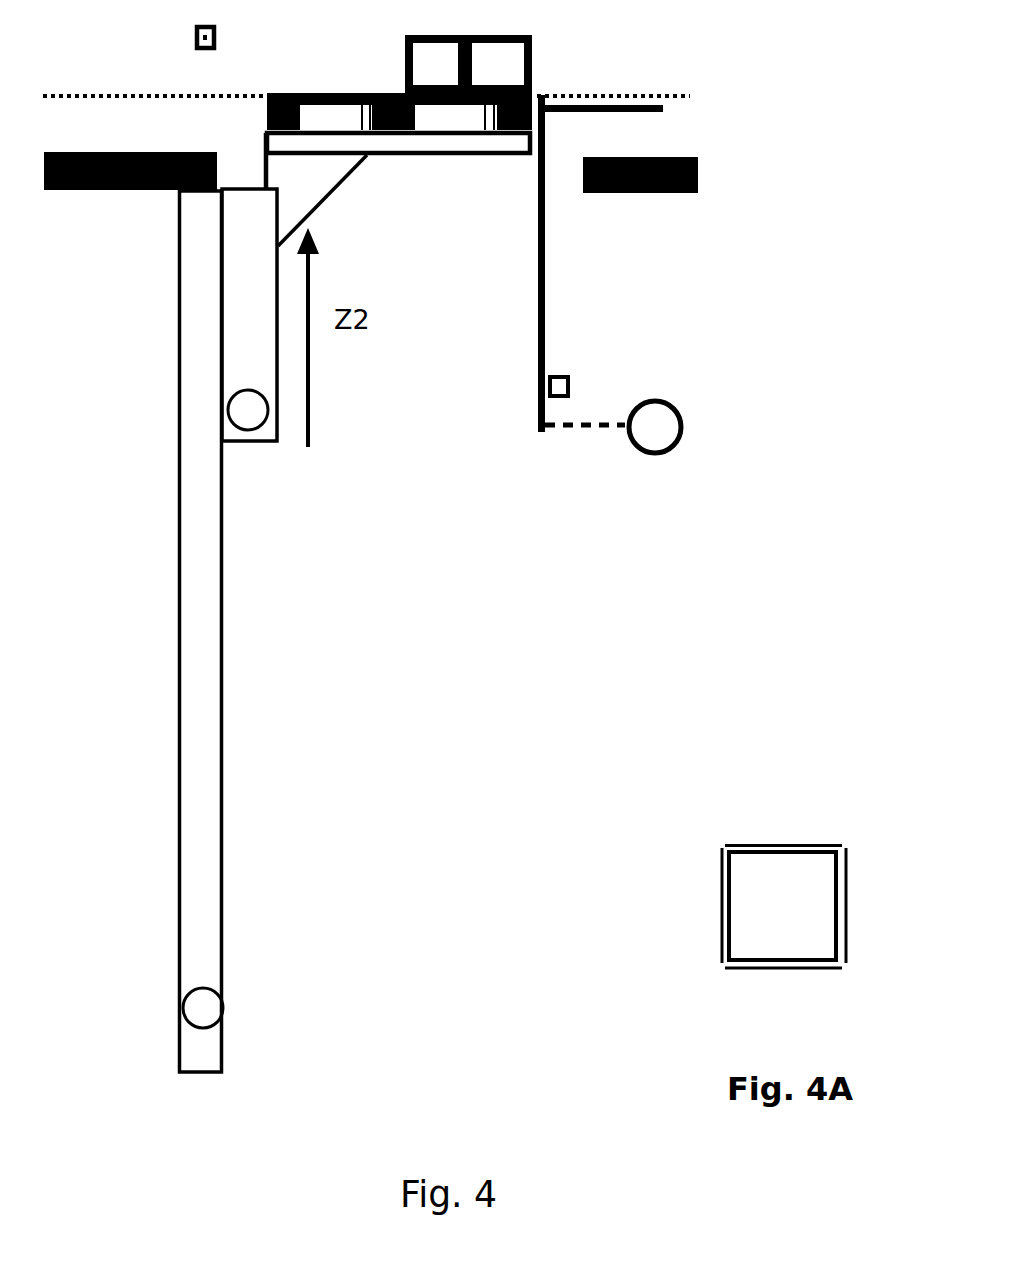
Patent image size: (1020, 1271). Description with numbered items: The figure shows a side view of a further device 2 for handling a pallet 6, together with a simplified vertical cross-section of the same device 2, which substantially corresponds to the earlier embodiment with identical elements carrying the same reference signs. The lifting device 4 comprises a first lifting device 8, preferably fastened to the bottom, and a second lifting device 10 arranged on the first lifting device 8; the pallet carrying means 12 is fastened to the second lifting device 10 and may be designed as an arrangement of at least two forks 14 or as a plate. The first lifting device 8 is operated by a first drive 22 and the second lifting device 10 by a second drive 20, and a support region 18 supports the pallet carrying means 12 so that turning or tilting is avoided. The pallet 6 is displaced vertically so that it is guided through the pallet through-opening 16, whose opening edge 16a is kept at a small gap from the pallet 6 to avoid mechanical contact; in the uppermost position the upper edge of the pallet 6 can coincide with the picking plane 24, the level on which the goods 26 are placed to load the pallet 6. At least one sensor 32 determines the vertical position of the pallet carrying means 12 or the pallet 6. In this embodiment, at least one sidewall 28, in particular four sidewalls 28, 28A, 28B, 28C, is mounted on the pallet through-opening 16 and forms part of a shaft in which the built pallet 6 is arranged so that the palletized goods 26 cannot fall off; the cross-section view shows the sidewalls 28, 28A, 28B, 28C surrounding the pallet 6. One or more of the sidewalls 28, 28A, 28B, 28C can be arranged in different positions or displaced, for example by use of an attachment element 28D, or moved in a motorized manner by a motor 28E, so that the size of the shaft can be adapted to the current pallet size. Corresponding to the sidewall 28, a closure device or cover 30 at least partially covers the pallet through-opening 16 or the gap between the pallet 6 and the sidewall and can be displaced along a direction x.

In FIG. 4, the device 2 is at (722, 392).
In FIG. 4, the lifting device 4 is at (140, 390).
In FIG. 4, the pallet 6 is at (266, 112).
In FIG. 4A, the pallet 6 is at (778, 950).
In FIG. 4, the first lifting device 8 is at (196, 522).
In FIG. 4, the second lifting device 10 is at (249, 315).
In FIG. 4, the pallet carrying means 12 is at (362, 185).
In FIG. 4, the forks 14 is at (440, 156).
In FIG. 4, the pallet through-opening 16 is at (500, 178).
In FIG. 4A, the pallet through-opening 16 is at (739, 843).
In FIG. 4, the opening edge 16a is at (583, 178).
In FIG. 4, the support region 18 is at (314, 200).
In FIG. 4, the second drive 20 is at (203, 986).
In FIG. 4, the first drive 22 is at (247, 388).
In FIG. 4, the picking plane 24 is at (690, 97).
In FIG. 4, the goods 26 is at (534, 47).
In FIG. 4, the sidewall 28 is at (548, 350).
In FIG. 4A, the sidewall 28 is at (848, 893).
In FIG. 4A, the sidewall 28A is at (820, 970).
In FIG. 4A, the sidewall 28B is at (720, 883).
In FIG. 4A, the sidewall 28C is at (800, 843).
In FIG. 4, the attachment element 28D is at (569, 389).
In FIG. 4, the motor 28E is at (650, 450).
In FIG. 4, the closure device or cover 30 is at (590, 114).
In FIG. 4, the sensor 32 is at (195, 34).